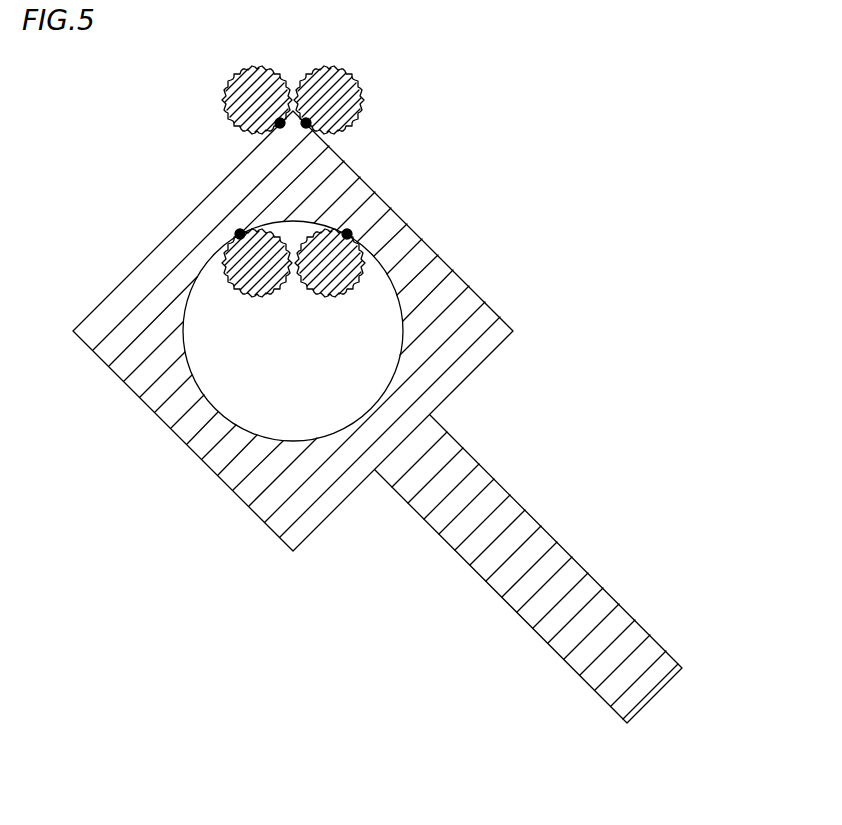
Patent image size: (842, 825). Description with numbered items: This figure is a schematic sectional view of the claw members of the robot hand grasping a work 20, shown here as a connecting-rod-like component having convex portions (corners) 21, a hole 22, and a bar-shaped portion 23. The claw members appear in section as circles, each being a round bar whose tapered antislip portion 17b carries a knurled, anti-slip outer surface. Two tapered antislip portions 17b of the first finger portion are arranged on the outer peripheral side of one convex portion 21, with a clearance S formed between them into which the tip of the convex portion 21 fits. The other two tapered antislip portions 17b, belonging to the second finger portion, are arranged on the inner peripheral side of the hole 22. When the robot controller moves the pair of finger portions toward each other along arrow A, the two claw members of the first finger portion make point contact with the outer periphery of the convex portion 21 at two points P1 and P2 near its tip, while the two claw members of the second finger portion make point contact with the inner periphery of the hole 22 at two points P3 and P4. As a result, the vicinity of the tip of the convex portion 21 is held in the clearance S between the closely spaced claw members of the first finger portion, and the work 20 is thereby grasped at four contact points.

The tapered antislip portion 17b is at (225, 93).
The work 20 is at (368, 417).
The convex portion 21 is at (300, 134).
The hole 22 is at (216, 407).
The bar-shaped portion 23 is at (550, 562).
The point P1 is at (263, 110).
The point P2 is at (322, 110).
The point P3 is at (231, 217).
The point P4 is at (356, 219).
The clearance S is at (292, 80).
The arrow A is at (296, 15).